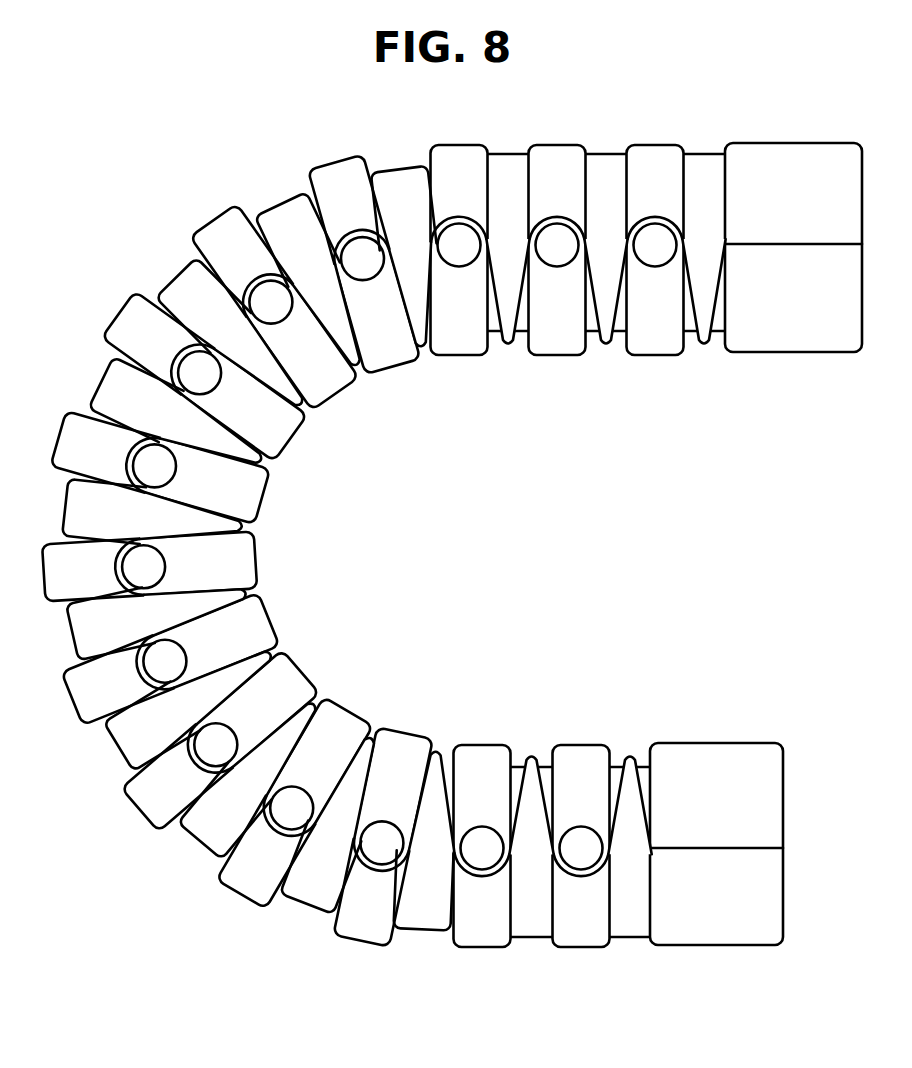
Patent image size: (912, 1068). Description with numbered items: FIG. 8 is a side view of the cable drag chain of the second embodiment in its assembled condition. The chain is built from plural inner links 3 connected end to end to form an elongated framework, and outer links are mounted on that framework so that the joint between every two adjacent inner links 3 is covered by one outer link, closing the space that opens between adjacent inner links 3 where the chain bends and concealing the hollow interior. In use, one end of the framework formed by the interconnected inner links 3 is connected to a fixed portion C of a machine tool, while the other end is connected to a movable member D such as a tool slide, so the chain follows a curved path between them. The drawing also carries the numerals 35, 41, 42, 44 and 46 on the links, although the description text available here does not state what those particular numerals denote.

The inner link 3 is at (528, 927).
The tapered connecting portion 35 is at (518, 765).
The outer link plate 41 is at (575, 752).
The link plate connecting part 42 is at (587, 935).
The connecting pin 44 is at (582, 840).
The pin hole 46 is at (581, 848).
The fixed portion C is at (708, 933).
The movable member D is at (793, 160).